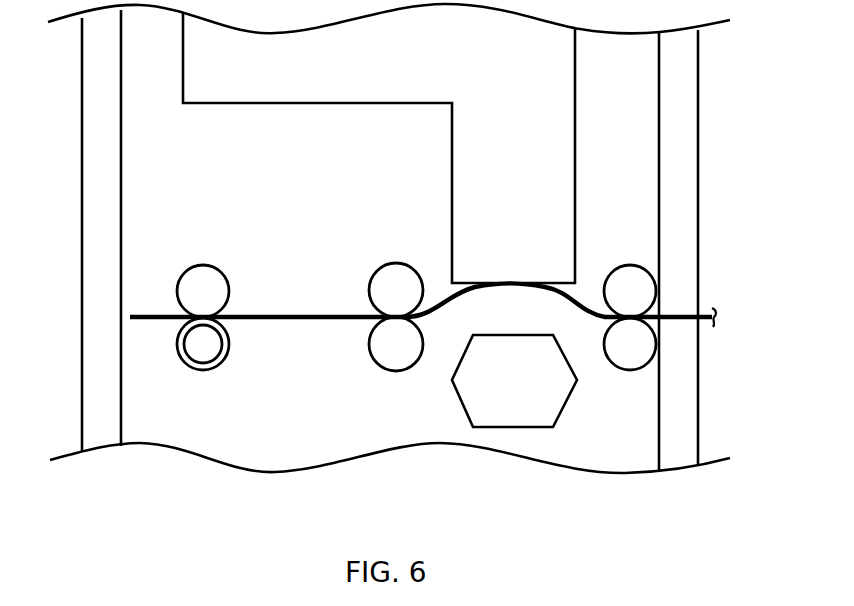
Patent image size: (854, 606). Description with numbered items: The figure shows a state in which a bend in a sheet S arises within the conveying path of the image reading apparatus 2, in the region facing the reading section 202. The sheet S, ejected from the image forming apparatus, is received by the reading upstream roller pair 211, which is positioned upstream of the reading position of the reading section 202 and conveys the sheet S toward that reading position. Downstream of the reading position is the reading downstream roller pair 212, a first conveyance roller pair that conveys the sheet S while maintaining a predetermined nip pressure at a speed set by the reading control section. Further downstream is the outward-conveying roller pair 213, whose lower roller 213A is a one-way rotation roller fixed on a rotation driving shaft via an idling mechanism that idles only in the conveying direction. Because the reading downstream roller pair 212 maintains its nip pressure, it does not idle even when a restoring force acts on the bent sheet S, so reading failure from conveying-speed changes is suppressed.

The image reading apparatus 2 is at (680, 132).
The reading section 202 is at (553, 198).
The reading upstream roller pair 211 is at (668, 290).
The reading downstream roller pair 212 is at (392, 260).
The outward-conveying roller pair 213 is at (172, 290).
The lower roller 213A is at (203, 372).
The sheet S is at (306, 314).